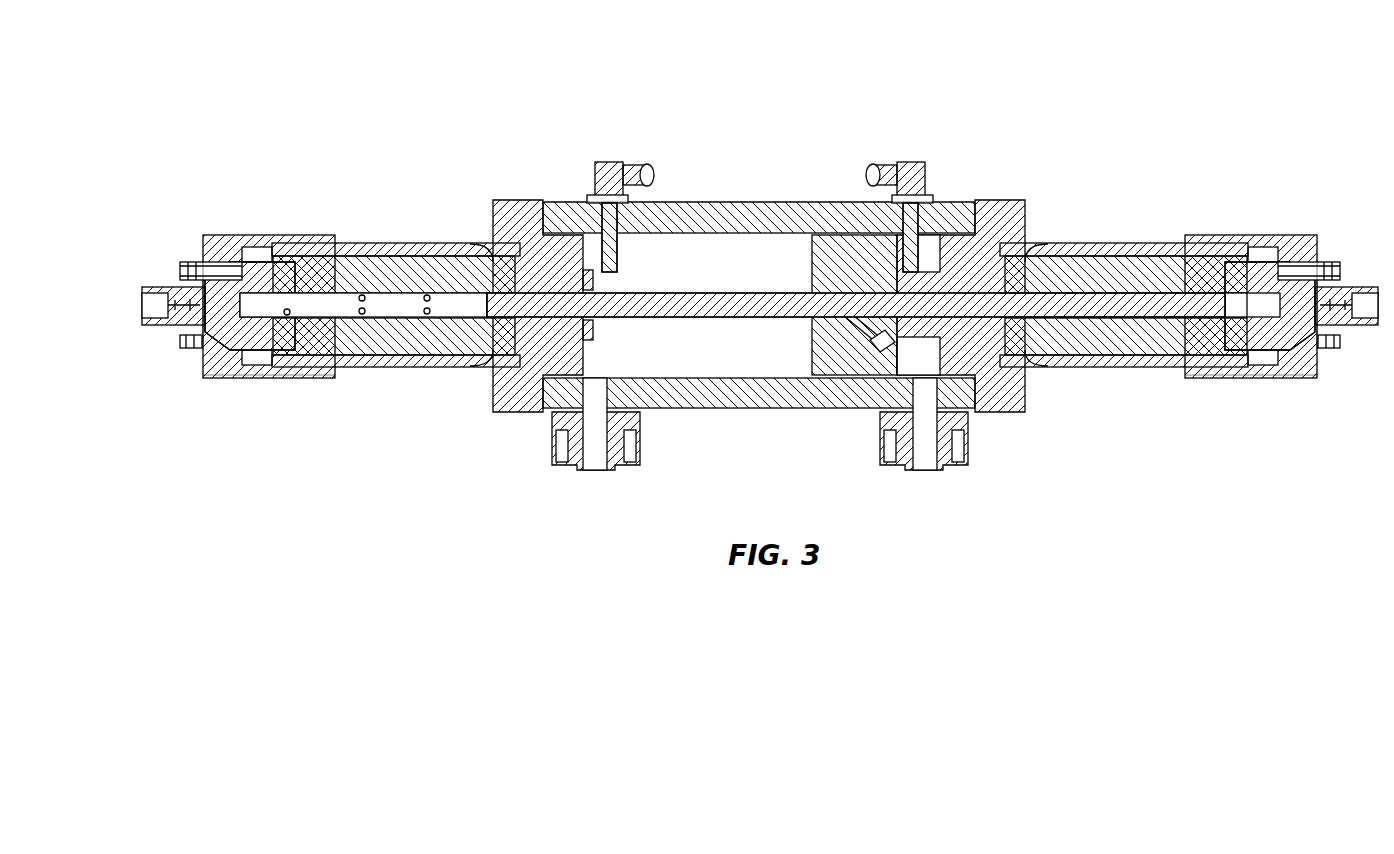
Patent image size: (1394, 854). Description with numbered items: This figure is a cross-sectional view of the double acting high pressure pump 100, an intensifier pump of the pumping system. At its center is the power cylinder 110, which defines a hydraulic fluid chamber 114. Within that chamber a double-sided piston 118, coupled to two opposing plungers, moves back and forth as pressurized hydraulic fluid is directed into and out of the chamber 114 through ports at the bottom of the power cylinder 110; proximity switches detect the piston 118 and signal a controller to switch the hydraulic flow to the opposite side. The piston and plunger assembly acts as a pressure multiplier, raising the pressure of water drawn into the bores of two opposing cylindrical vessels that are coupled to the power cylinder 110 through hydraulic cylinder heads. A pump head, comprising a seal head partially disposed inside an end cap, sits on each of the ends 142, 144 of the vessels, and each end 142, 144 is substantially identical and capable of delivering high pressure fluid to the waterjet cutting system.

The double acting high pressure pump 100 is at (763, 95).
The power cylinder 110 is at (797, 204).
The hydraulic fluid chamber 114 is at (720, 378).
The double-sided piston 118 is at (836, 352).
The end 142 is at (232, 405).
The end 144 is at (1290, 405).